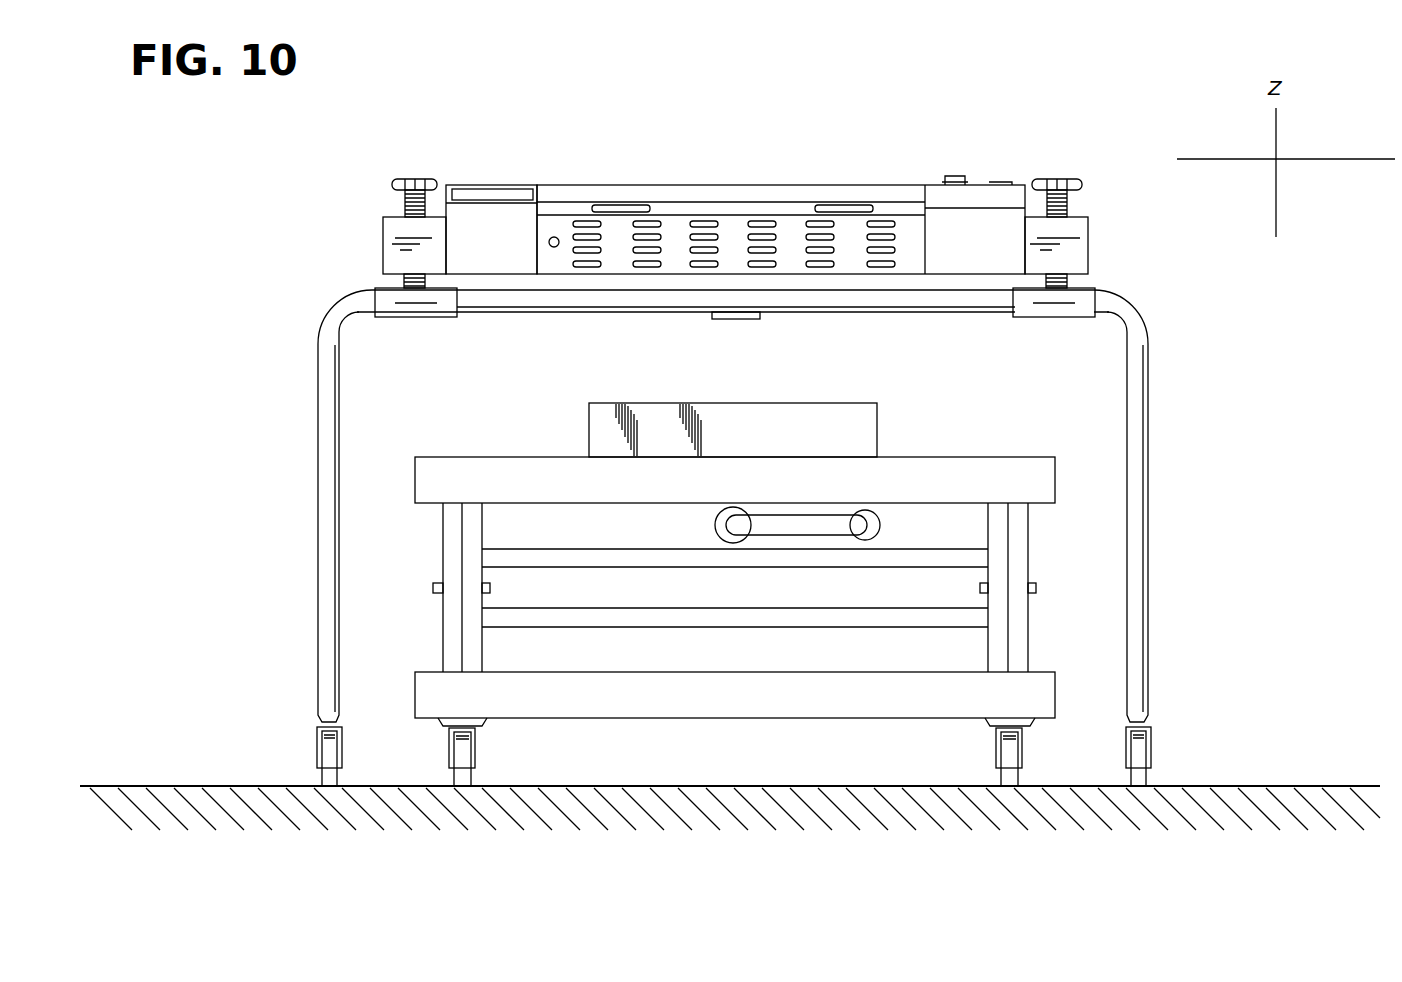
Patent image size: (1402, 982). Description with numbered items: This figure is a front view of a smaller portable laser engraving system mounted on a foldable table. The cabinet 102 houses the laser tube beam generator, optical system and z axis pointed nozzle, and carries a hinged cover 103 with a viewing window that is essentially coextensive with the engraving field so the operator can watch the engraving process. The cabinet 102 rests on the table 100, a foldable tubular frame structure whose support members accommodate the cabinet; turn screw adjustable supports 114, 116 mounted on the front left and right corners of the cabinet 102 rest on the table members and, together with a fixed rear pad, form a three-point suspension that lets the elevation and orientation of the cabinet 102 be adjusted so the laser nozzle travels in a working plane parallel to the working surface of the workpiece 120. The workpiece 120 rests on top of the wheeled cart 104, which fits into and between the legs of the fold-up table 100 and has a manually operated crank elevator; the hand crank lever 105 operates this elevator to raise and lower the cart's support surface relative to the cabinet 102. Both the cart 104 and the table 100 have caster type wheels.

The table 100 is at (1152, 344).
The cabinet 102 is at (505, 176).
The hinged cover 103 is at (678, 185).
The wheeled cart 104 is at (988, 457).
The hand crank lever 105 is at (818, 536).
The turn screw adjustable support 114 is at (405, 178).
The turn screw adjustable support 116 is at (1062, 179).
The workpiece 120 is at (802, 403).